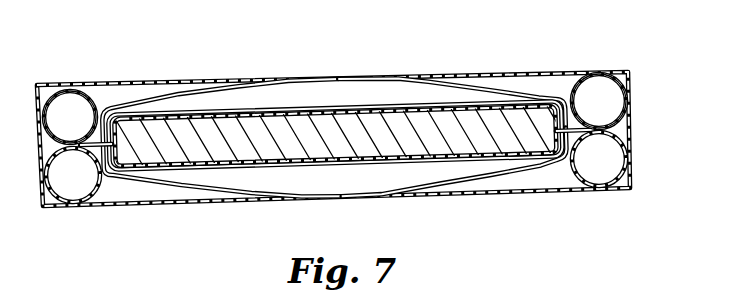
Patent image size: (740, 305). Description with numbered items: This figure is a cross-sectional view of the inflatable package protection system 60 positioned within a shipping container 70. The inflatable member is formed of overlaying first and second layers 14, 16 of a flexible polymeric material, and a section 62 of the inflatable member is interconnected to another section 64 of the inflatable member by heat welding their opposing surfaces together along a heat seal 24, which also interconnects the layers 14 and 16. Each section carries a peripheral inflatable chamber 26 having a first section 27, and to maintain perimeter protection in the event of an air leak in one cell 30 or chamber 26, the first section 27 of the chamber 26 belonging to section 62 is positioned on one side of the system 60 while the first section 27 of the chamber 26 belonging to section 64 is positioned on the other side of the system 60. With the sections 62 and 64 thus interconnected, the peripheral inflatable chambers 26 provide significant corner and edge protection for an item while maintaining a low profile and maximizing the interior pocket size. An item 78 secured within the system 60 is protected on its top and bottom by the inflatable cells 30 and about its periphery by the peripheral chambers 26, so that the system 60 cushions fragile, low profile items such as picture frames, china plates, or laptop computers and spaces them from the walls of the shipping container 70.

The first layer 14 is at (452, 103).
The second layer 16 is at (335, 136).
The heat seal 24 is at (335, 135).
The inflatable chamber 26 is at (94, 88).
The first section of inflatable chamber 27 is at (603, 82).
The inflatable cell 30 is at (454, 162).
The system 60 is at (336, 114).
The section of inflatable member 62 is at (220, 112).
The section of inflatable member 64 is at (222, 170).
The shipping container 70 is at (562, 71).
The item 78 is at (332, 135).